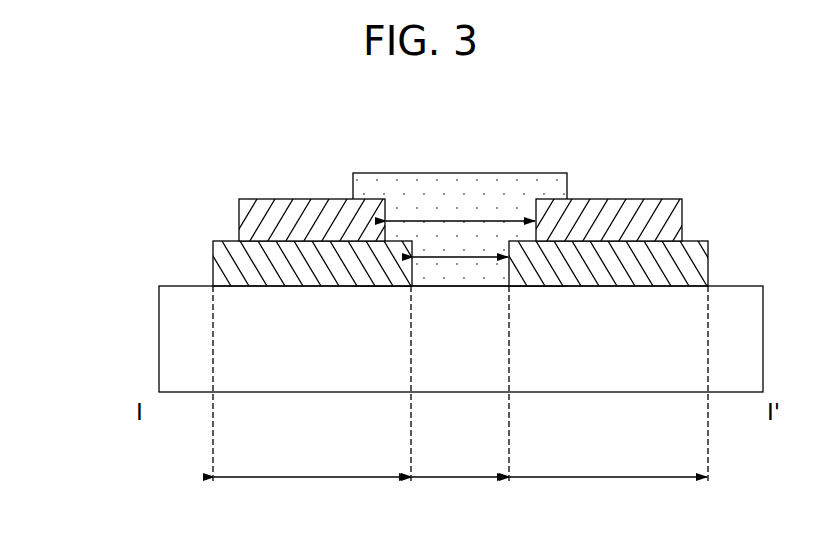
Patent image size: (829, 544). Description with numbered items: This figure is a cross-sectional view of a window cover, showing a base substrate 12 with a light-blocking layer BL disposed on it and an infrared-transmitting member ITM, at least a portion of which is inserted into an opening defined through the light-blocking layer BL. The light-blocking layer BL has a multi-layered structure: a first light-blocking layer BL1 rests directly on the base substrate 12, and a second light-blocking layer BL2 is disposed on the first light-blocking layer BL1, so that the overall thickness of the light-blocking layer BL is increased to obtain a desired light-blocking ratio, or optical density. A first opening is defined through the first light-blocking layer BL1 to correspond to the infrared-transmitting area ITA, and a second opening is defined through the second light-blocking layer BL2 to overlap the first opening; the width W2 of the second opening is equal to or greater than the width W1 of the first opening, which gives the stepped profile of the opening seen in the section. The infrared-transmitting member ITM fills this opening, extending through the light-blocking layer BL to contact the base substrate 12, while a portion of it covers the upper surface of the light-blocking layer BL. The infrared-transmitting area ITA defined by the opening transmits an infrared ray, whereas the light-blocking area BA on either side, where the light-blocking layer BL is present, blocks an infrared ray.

The base substrate 12 is at (172, 339).
The light-blocking layer BL is at (73, 217).
The first light-blocking layer BL1 is at (222, 267).
The second light-blocking layer BL2 is at (240, 220).
The infrared-transmitting member ITM is at (522, 182).
The width of the first opening W1 is at (473, 253).
The width of the second opening W2 is at (437, 217).
The light-blocking area BA is at (460, 493).
The infrared-transmitting area ITA is at (460, 493).